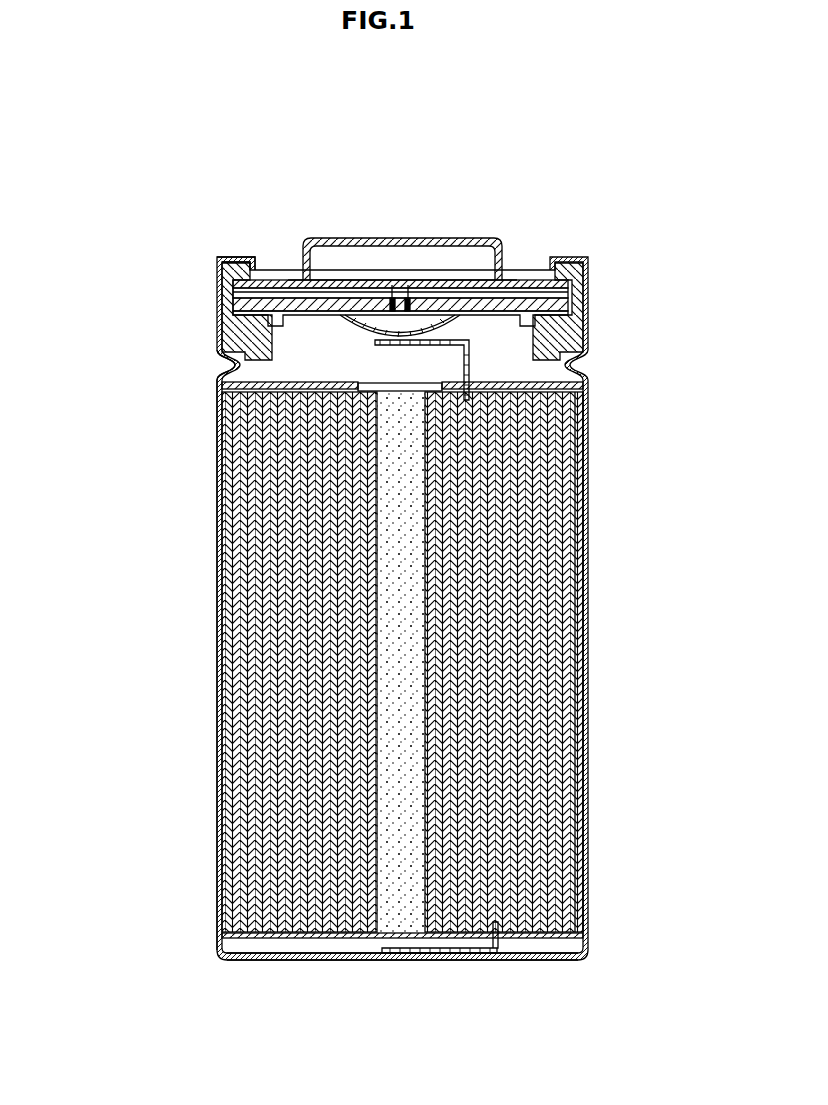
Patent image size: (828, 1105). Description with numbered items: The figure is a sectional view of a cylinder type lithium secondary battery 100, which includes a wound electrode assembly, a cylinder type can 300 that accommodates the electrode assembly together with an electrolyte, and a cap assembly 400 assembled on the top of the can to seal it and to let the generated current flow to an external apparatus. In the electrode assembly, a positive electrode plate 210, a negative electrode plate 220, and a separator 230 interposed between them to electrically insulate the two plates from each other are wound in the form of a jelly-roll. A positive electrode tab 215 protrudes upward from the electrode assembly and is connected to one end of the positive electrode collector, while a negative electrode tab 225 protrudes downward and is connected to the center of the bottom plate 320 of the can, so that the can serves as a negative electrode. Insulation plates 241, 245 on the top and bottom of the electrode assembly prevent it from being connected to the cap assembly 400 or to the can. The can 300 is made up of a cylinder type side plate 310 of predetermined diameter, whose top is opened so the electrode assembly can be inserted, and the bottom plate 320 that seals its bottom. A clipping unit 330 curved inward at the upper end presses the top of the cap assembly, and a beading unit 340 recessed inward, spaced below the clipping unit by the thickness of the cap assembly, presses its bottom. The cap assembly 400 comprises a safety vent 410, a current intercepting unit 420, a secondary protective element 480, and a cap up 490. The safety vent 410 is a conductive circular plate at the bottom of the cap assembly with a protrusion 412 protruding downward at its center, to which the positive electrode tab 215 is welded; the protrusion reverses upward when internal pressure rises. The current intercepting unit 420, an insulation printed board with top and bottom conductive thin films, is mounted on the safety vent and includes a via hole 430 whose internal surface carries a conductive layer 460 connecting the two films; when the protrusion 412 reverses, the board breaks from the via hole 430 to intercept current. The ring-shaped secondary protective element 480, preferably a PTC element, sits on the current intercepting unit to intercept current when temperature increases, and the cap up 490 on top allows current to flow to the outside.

The cylinder type lithium secondary battery 100 is at (612, 221).
The positive electrode plate 210 is at (456, 662).
The positive electrode tab 215 is at (469, 347).
The negative electrode plate 220 is at (584, 437).
The negative electrode tab 225 is at (487, 960).
The separator 230 is at (576, 484).
The insulation plate 241 is at (579, 386).
The insulation plate 245 is at (566, 943).
The cylinder type can 300 is at (314, 617).
The cylinder type side plate 310 is at (218, 430).
The bottom plate 320 is at (245, 962).
The clipping unit 330 is at (216, 258).
The beading unit 340 is at (218, 363).
The cap assembly 400 is at (400, 238).
The safety vent 410 is at (333, 283).
The protrusion 412 is at (373, 336).
The current intercepting unit 420 is at (458, 291).
The via hole 430 is at (408, 285).
The conductive layer 460 is at (392, 285).
The secondary protective element 480 is at (484, 290).
The cap up 490 is at (322, 238).